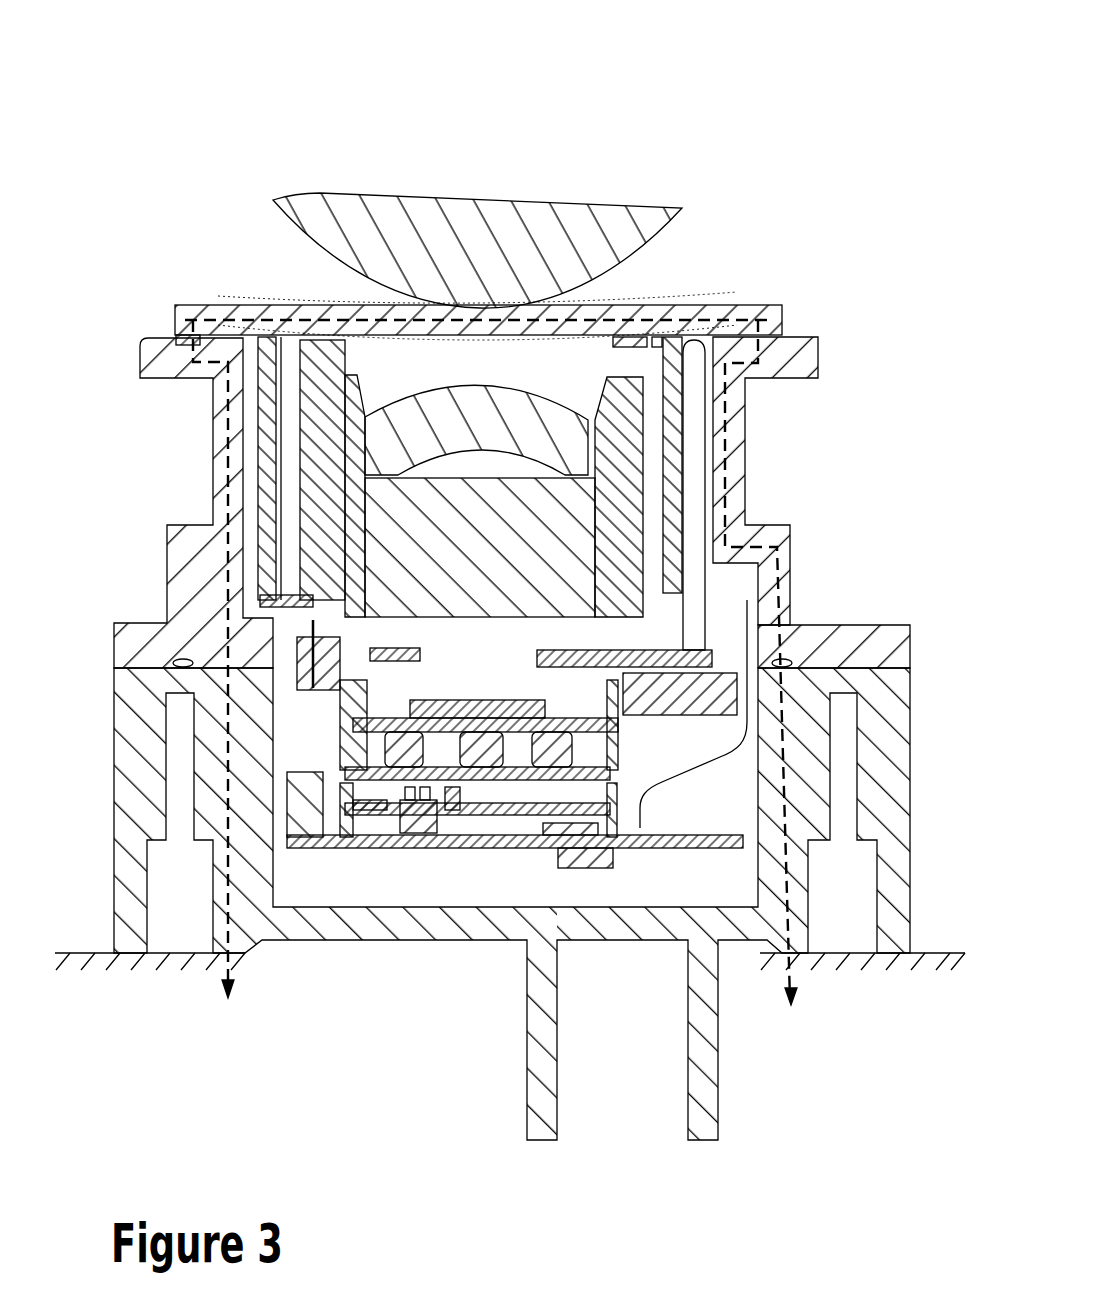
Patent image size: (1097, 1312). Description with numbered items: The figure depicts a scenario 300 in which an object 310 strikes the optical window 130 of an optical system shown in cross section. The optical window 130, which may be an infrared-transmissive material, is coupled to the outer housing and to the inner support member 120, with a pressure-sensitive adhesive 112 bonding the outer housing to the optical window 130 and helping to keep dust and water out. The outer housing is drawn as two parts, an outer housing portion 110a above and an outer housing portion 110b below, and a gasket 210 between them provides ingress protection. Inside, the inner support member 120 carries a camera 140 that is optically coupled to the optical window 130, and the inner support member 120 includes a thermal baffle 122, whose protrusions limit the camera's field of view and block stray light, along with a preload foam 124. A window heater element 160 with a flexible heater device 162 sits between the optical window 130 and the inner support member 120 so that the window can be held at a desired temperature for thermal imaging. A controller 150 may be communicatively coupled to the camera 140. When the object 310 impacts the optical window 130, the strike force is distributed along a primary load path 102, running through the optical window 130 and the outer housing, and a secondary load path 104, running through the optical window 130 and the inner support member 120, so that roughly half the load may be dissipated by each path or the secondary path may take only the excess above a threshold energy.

The scenario 300 is at (886, 90).
The object 310 is at (640, 250).
The optical window 130 is at (303, 303).
The pressure-sensitive adhesive 112 is at (182, 340).
The outer housing portion 110a is at (140, 355).
The outer housing portion 110b is at (112, 788).
The inner support member 120 is at (275, 432).
The thermal baffle 122 is at (347, 350).
The preload foam 124 is at (262, 602).
The secondary load path 104 is at (300, 645).
The camera 140 is at (500, 698).
The controller 150 is at (552, 777).
The gasket 210 is at (773, 520).
The primary load path 102 is at (805, 983).
The window heater element 160 is at (658, 345).
The flexible heater device 162 is at (657, 342).